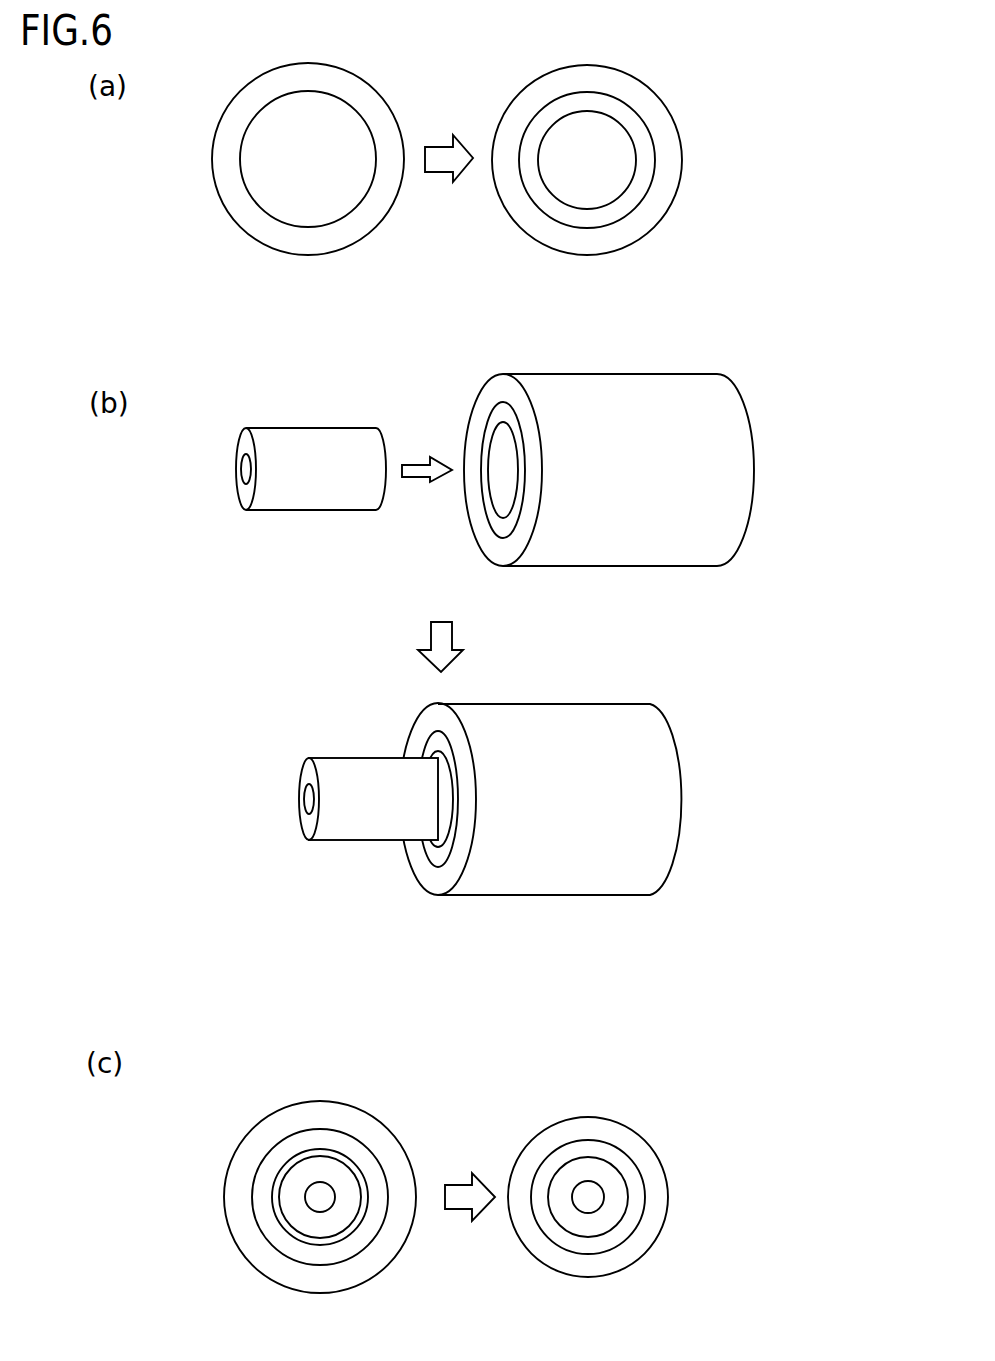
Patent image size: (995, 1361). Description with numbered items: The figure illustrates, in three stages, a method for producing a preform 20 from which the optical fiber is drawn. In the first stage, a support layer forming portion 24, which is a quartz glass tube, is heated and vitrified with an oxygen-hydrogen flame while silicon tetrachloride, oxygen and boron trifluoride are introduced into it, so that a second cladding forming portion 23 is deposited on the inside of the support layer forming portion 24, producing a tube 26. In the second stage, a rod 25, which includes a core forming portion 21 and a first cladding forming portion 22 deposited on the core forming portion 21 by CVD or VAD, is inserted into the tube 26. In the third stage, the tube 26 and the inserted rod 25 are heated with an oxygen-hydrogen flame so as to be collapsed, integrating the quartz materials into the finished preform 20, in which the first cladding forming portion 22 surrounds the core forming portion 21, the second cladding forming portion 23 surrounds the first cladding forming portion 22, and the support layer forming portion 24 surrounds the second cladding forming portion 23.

The preform 20 is at (627, 1118).
The core forming portion 21 is at (244, 469).
The first cladding forming portion 22 is at (245, 495).
The second cladding forming portion 23 is at (641, 158).
The support layer forming portion 24 is at (372, 200).
The rod 25 is at (449, 862).
The tube 26 is at (505, 678).